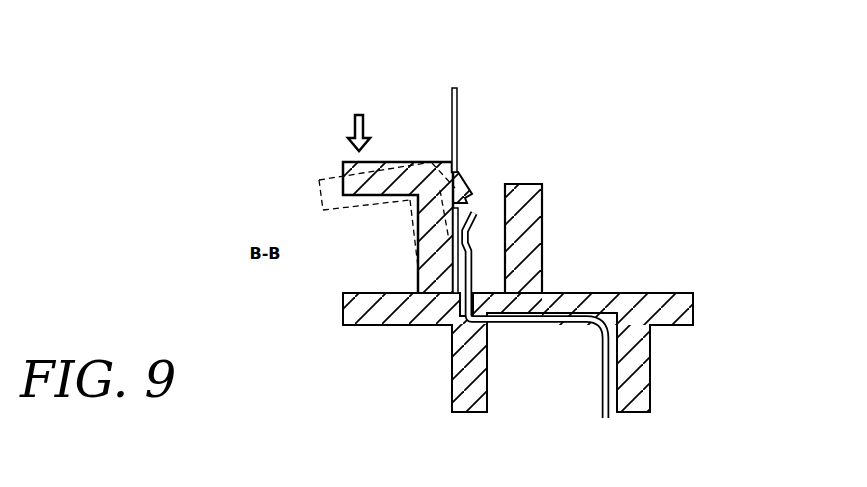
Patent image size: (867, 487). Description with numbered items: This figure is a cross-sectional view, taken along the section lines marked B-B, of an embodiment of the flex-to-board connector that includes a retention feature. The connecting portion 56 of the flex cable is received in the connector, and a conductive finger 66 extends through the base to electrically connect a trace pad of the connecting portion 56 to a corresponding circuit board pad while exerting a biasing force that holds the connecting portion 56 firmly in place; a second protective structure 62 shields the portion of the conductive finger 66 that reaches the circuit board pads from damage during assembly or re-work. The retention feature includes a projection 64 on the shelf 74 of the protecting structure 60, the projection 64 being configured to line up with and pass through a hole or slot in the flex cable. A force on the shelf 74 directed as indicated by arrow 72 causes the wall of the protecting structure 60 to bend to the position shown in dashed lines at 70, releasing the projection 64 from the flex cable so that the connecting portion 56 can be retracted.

The connecting portion 56 is at (455, 125).
The protecting structure 60 is at (542, 240).
The second protective structure 62 is at (452, 387).
The projection 64 is at (468, 195).
The conductive finger 66 is at (468, 268).
The bent wall of protecting structure 70 is at (338, 212).
The arrow 72 is at (352, 113).
The shelf 74 is at (370, 162).